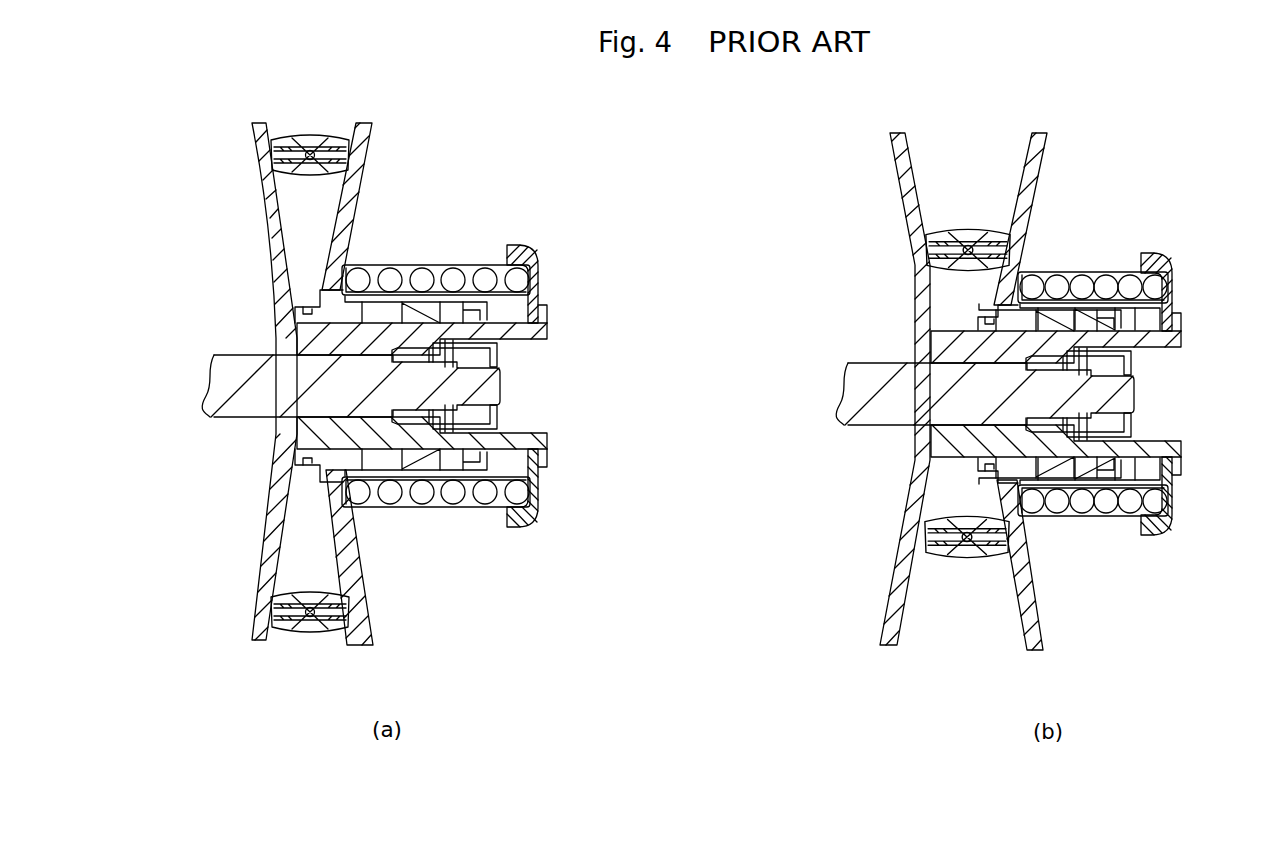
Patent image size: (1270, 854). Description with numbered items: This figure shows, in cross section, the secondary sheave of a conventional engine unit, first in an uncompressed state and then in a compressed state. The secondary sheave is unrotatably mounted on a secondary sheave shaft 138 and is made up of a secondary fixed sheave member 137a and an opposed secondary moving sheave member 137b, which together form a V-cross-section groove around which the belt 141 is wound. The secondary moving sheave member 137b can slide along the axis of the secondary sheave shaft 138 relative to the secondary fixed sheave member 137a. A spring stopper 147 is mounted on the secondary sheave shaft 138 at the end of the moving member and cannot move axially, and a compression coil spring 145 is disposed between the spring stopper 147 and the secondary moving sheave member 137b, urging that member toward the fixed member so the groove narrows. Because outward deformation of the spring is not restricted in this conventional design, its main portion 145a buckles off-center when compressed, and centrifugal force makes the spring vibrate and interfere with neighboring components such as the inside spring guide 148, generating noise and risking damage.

The secondary fixed sheave member 137a is at (253, 633).
The secondary moving sheave member 137b is at (368, 634).
The secondary sheave shaft 138 is at (501, 382).
The belt 141 is at (330, 636).
The compression coil spring 145 is at (755, 401).
The main portion 145a is at (1137, 261).
The spring stopper 147 is at (540, 492).
The inside spring guide 148 is at (325, 486).